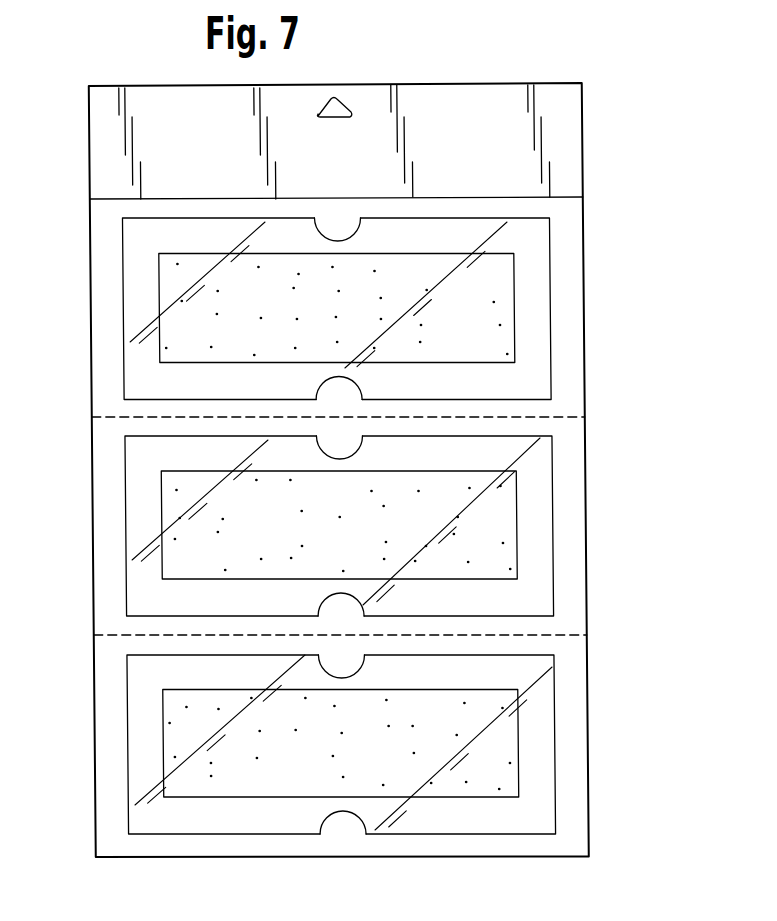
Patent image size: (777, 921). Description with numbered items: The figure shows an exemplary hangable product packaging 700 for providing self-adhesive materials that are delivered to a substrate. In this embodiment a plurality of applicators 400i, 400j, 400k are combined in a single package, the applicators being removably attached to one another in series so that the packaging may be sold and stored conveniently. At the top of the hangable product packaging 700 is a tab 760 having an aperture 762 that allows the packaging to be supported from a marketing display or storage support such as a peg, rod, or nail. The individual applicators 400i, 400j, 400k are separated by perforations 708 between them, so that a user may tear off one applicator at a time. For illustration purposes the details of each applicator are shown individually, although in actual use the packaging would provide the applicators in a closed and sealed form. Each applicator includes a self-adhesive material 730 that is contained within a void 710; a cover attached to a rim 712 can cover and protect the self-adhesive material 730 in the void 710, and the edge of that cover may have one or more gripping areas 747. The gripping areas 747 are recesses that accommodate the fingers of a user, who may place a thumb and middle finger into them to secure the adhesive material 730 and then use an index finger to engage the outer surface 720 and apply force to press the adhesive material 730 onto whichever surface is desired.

The hangable product packaging 700 is at (373, 458).
The tab 760 is at (374, 122).
The aperture 762 is at (322, 106).
The self-adhesive material 730 is at (490, 287).
The applicator 400i is at (408, 309).
The applicator 400j is at (410, 526).
The applicator 400k is at (566, 680).
The void 710 is at (537, 371).
The outer surface 720 is at (535, 582).
The perforations 708 is at (555, 415).
The rim 712 is at (567, 632).
The gripping areas 747 is at (340, 666).